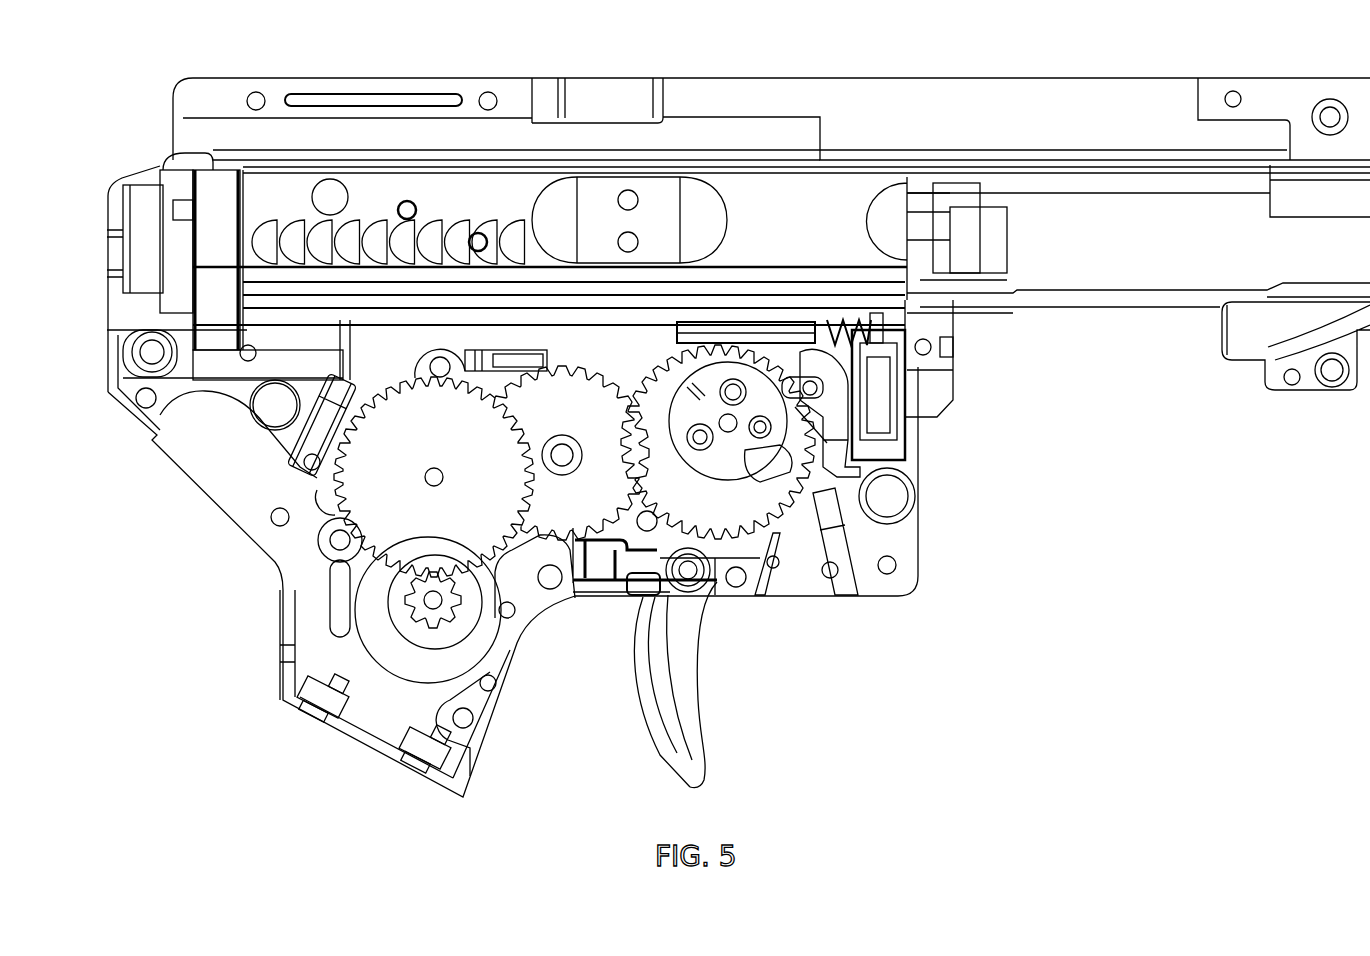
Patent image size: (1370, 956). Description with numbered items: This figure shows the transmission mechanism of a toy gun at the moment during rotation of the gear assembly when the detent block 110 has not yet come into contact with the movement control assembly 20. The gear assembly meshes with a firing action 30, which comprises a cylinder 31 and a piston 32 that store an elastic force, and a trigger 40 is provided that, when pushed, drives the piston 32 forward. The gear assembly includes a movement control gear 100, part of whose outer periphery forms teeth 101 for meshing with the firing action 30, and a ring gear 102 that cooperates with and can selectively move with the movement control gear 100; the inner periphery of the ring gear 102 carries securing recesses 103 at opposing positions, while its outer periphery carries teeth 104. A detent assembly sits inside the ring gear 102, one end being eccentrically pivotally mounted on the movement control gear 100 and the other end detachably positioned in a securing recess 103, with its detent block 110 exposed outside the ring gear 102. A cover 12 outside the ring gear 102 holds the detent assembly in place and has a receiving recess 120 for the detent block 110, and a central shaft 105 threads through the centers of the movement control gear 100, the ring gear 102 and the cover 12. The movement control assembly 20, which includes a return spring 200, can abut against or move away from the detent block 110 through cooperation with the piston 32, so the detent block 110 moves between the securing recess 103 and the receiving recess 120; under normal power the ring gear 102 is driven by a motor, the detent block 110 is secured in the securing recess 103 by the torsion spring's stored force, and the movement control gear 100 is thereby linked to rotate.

The cover 12 is at (880, 490).
The movement control assembly 20 is at (845, 413).
The firing action 30 is at (845, 130).
The cylinder 31 is at (780, 195).
The piston 32 is at (205, 198).
The trigger 40 is at (700, 765).
The movement control gear 100 is at (830, 445).
The teeth 101 is at (748, 592).
The ring gear 102 is at (640, 600).
The securing recesses 103 is at (780, 540).
The teeth 104 is at (722, 598).
The central shaft 105 is at (602, 600).
The detent block 110 is at (832, 535).
The receiving recess 120 is at (716, 600).
The return spring 200 is at (940, 333).